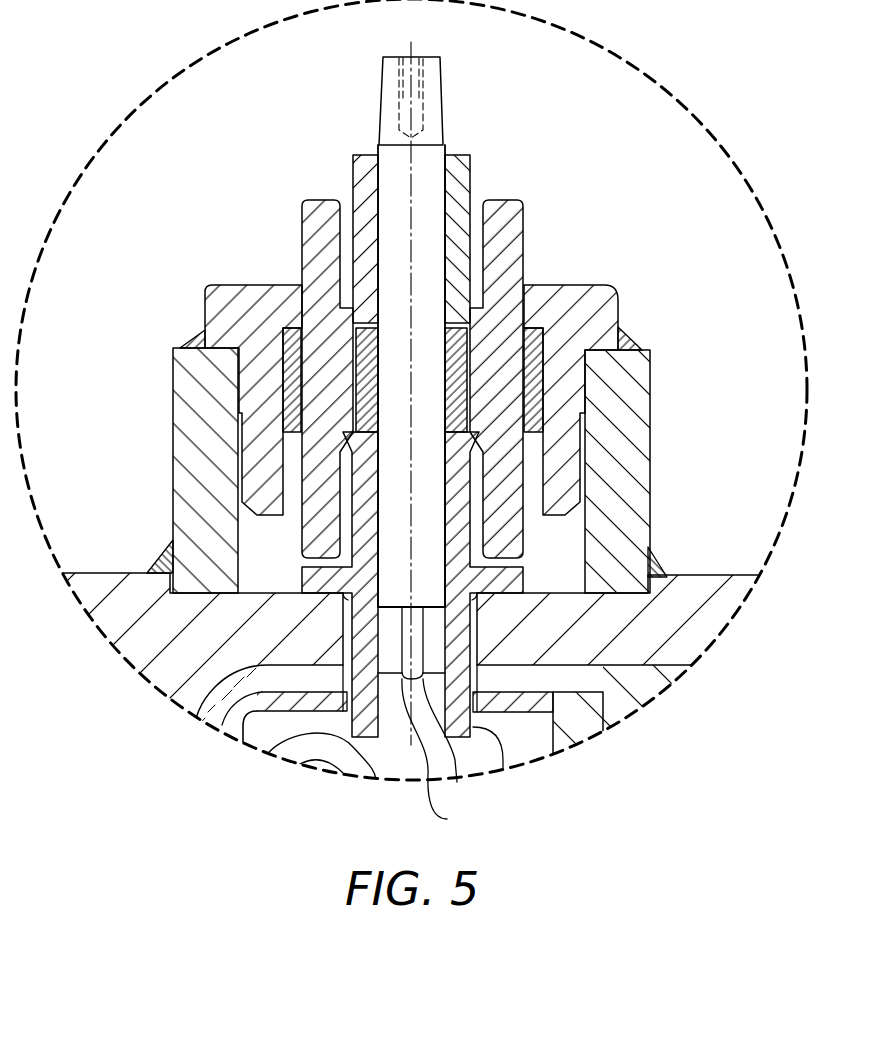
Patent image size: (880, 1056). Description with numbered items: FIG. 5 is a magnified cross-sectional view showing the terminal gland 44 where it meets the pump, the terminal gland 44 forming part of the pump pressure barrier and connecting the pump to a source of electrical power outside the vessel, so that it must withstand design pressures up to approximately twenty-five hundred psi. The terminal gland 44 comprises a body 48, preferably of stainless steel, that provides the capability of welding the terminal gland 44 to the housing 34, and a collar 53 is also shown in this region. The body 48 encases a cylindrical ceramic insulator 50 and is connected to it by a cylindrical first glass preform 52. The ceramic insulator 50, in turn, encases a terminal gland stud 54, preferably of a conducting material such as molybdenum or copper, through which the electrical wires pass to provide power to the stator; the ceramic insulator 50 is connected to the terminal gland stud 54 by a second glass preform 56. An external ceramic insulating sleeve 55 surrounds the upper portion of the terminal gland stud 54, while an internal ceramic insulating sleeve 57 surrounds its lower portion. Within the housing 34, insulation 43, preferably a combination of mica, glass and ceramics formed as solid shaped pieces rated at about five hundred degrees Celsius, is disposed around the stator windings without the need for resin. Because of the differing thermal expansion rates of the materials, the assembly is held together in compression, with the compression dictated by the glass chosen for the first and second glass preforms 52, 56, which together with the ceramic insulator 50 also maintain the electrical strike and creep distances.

The housing 34 is at (694, 590).
The insulation 43 is at (627, 705).
The terminal gland 44 is at (578, 190).
The body 48 is at (220, 296).
The ceramic insulator 50 is at (302, 244).
The first glass preform 52 is at (284, 352).
The collar 53 is at (352, 170).
The terminal gland stud 54 is at (443, 117).
The external ceramic insulating sleeve 55 is at (470, 164).
The second glass preform 56 is at (456, 357).
The internal ceramic insulating sleeve 57 is at (447, 819).